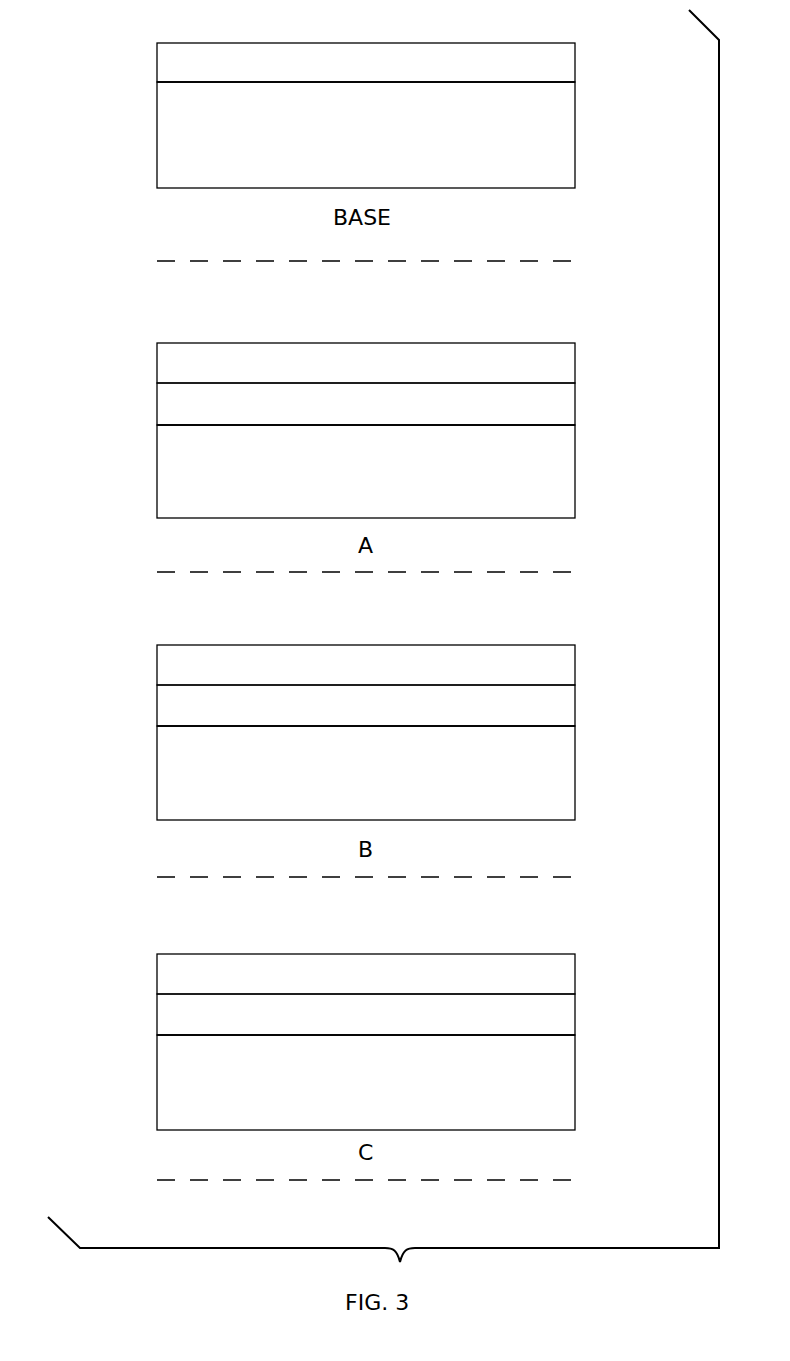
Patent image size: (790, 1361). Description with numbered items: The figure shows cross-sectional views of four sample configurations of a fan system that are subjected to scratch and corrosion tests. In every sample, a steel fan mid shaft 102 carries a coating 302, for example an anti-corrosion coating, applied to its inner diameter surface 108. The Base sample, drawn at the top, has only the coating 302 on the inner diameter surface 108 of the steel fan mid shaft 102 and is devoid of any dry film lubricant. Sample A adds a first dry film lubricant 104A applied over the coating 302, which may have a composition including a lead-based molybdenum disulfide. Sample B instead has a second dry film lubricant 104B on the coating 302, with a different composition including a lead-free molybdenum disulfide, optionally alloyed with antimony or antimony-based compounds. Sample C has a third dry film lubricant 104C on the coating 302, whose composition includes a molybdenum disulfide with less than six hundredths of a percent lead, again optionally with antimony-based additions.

The steel fan mid shaft 102 is at (576, 141).
The coating 302 is at (576, 63).
The first dry film lubricant 104A is at (576, 357).
The second dry film lubricant 104B is at (576, 659).
The third dry film lubricant 104C is at (576, 968).
The inner diameter surface 108 is at (193, 82).